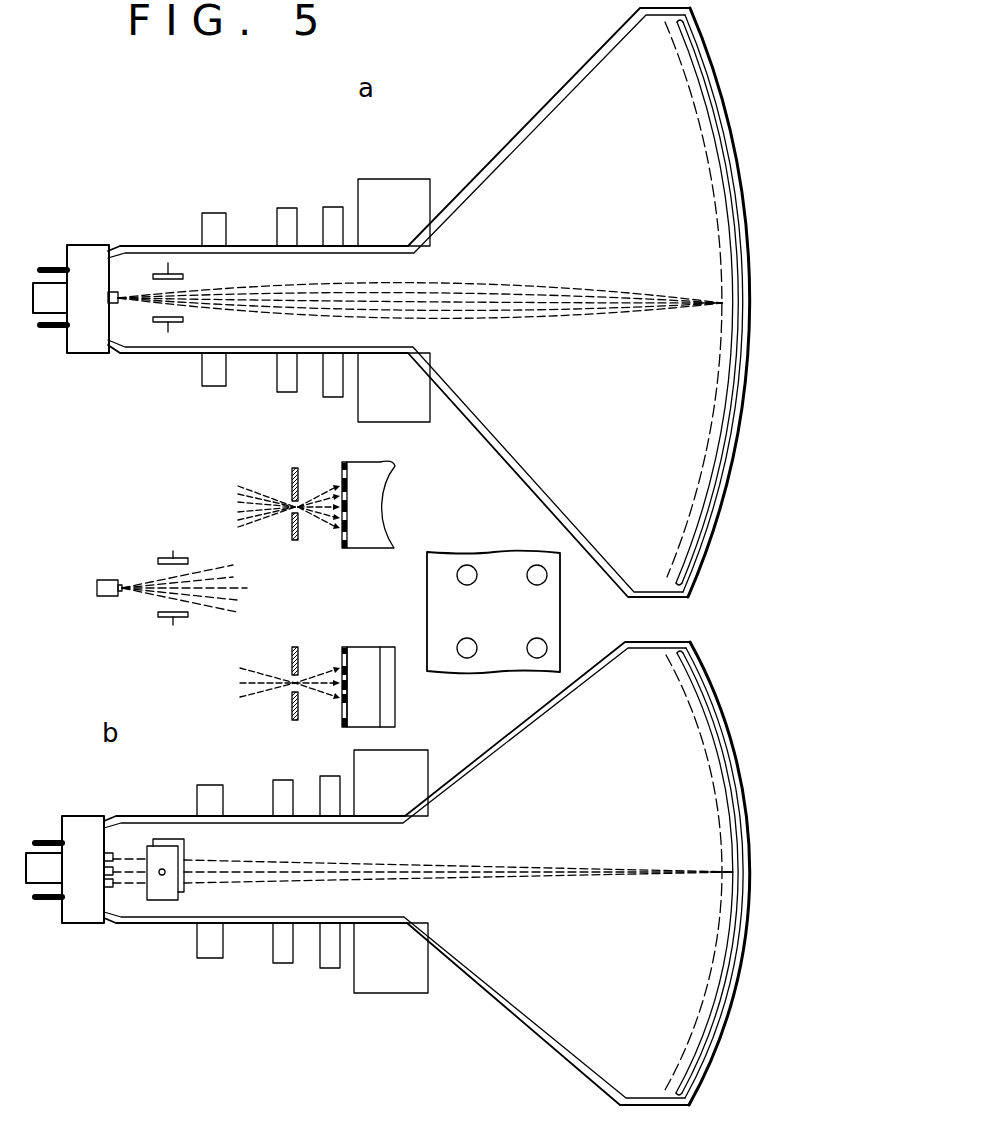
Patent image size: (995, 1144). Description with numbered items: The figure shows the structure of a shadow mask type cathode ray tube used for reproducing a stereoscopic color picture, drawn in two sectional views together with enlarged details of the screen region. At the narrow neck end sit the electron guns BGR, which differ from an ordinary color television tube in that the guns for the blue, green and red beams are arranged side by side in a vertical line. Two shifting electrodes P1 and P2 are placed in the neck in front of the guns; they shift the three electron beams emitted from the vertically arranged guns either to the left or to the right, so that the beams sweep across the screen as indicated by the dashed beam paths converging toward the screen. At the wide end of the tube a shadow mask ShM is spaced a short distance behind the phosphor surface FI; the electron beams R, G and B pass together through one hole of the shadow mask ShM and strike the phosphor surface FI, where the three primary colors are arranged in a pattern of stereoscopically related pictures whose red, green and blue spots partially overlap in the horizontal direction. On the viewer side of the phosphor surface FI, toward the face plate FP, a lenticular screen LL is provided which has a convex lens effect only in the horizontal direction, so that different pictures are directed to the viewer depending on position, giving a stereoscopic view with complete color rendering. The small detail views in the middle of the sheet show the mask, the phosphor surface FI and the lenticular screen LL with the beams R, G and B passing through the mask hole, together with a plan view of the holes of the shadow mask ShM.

The shifting electrode P1 is at (157, 263).
The shifting electrode P2 is at (157, 333).
The shadow mask ShM is at (681, 536).
The face plate FP is at (717, 517).
The phosphor surface FI is at (672, 590).
The lenticular screen LL is at (688, 592).
The electron guns BGR is at (102, 580).
The blue electron beam B is at (246, 668).
The green electron beam G is at (240, 683).
The red electron beam R is at (246, 697).